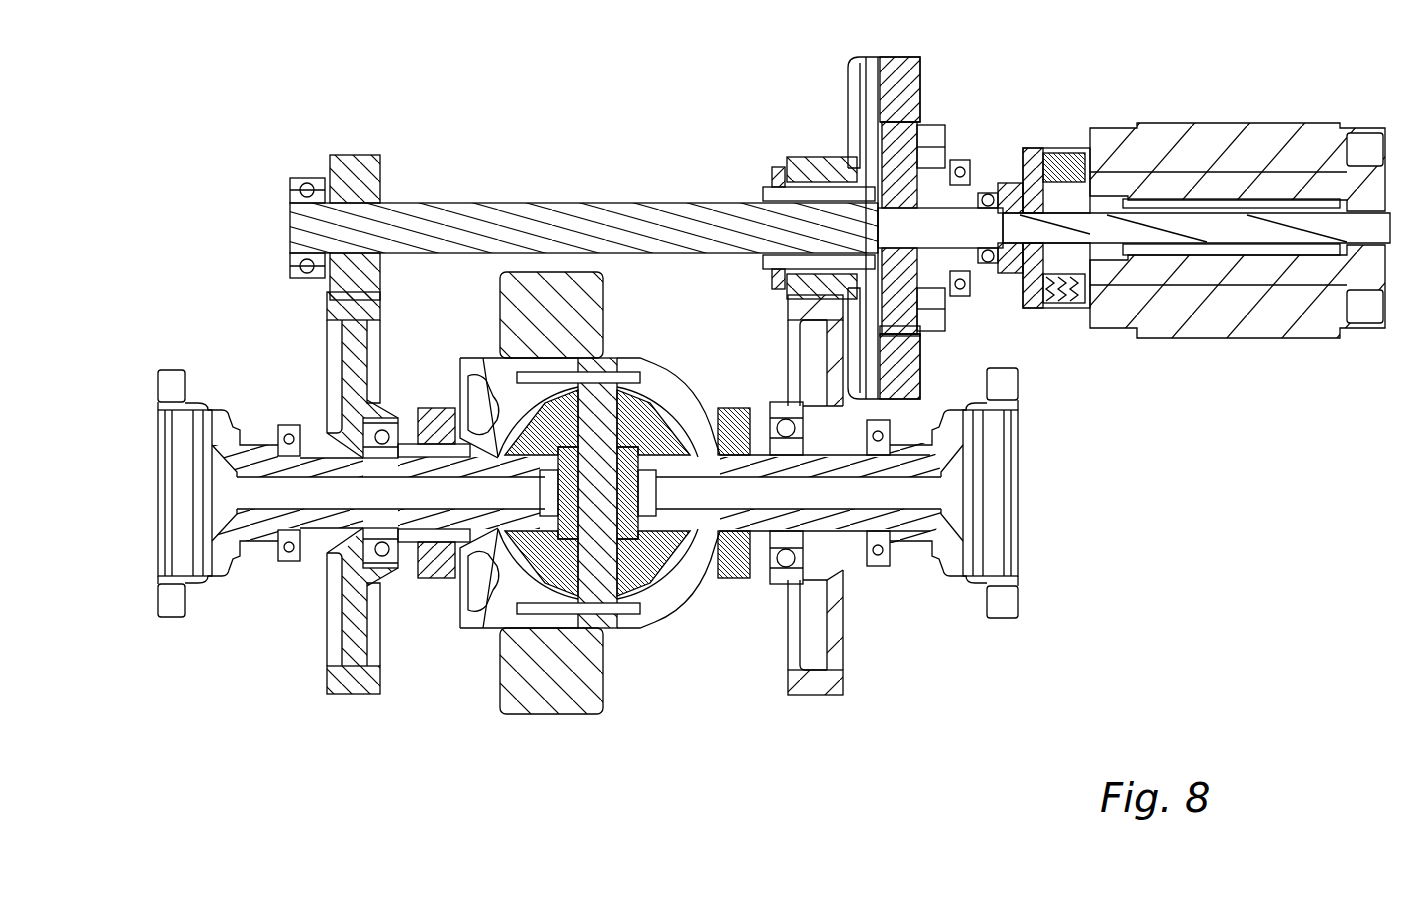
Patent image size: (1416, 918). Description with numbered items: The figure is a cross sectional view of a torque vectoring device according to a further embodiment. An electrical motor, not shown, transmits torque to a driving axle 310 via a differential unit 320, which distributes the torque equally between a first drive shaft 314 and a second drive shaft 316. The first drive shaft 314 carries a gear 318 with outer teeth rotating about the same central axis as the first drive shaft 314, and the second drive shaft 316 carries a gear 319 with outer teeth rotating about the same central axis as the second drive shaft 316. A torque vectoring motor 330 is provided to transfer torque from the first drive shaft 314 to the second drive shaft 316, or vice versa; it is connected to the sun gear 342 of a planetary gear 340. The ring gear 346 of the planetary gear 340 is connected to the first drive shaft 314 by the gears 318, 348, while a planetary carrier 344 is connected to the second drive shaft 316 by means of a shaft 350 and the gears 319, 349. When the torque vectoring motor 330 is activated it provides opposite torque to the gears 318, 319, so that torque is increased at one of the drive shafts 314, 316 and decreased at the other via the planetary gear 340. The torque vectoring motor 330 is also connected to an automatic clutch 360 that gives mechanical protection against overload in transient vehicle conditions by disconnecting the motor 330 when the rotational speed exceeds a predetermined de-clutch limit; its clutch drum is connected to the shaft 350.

The driving axle 310 is at (1016, 493).
The first drive shaft 314 is at (1020, 535).
The second drive shaft 316 is at (157, 425).
The gear 318 is at (843, 675).
The gear 319 is at (328, 670).
The differential unit 320 is at (630, 615).
The torque vectoring motor 330 is at (1205, 123).
The planetary gear 340 is at (951, 212).
The sun gear 342 is at (905, 232).
The planetary carrier 344 is at (900, 335).
The ring gear 346 is at (920, 72).
The gear 348 is at (800, 160).
The gear 349 is at (345, 155).
The shaft 350 is at (435, 203).
The automatic clutch 360 is at (1050, 148).